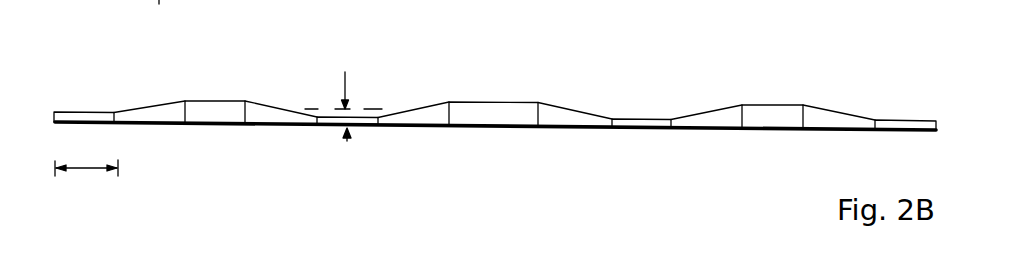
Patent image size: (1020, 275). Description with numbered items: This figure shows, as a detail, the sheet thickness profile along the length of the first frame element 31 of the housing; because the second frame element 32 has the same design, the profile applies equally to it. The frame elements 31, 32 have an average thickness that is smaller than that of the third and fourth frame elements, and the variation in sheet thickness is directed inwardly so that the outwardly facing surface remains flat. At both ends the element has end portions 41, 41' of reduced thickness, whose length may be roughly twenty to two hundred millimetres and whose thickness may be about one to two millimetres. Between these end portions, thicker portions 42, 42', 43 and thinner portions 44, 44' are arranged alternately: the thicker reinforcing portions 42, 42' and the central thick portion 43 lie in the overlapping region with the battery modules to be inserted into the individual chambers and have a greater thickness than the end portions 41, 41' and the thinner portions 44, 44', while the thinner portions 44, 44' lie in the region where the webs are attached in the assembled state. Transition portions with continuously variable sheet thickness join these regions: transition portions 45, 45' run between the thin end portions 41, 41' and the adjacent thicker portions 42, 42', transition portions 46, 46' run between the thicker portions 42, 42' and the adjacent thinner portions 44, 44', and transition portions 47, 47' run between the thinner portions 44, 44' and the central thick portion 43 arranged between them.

The first frame element 31 is at (495, 75).
The second frame element 32 is at (529, 46).
The end portion 41 is at (86, 134).
The end portion 41' is at (905, 90).
The thicker portion 42 is at (215, 84).
The thicker portion 42' is at (773, 89).
The central thick portion 43 is at (519, 111).
The thinner portion 44 is at (334, 159).
The thinner portion 44' is at (641, 159).
The transition portion 45 is at (149, 82).
The transition portion 45' is at (839, 83).
The transition portion 46 is at (281, 83).
The transition portion 46' is at (706, 85).
The transition portion 47 is at (415, 79).
The transition portion 47' is at (581, 80).